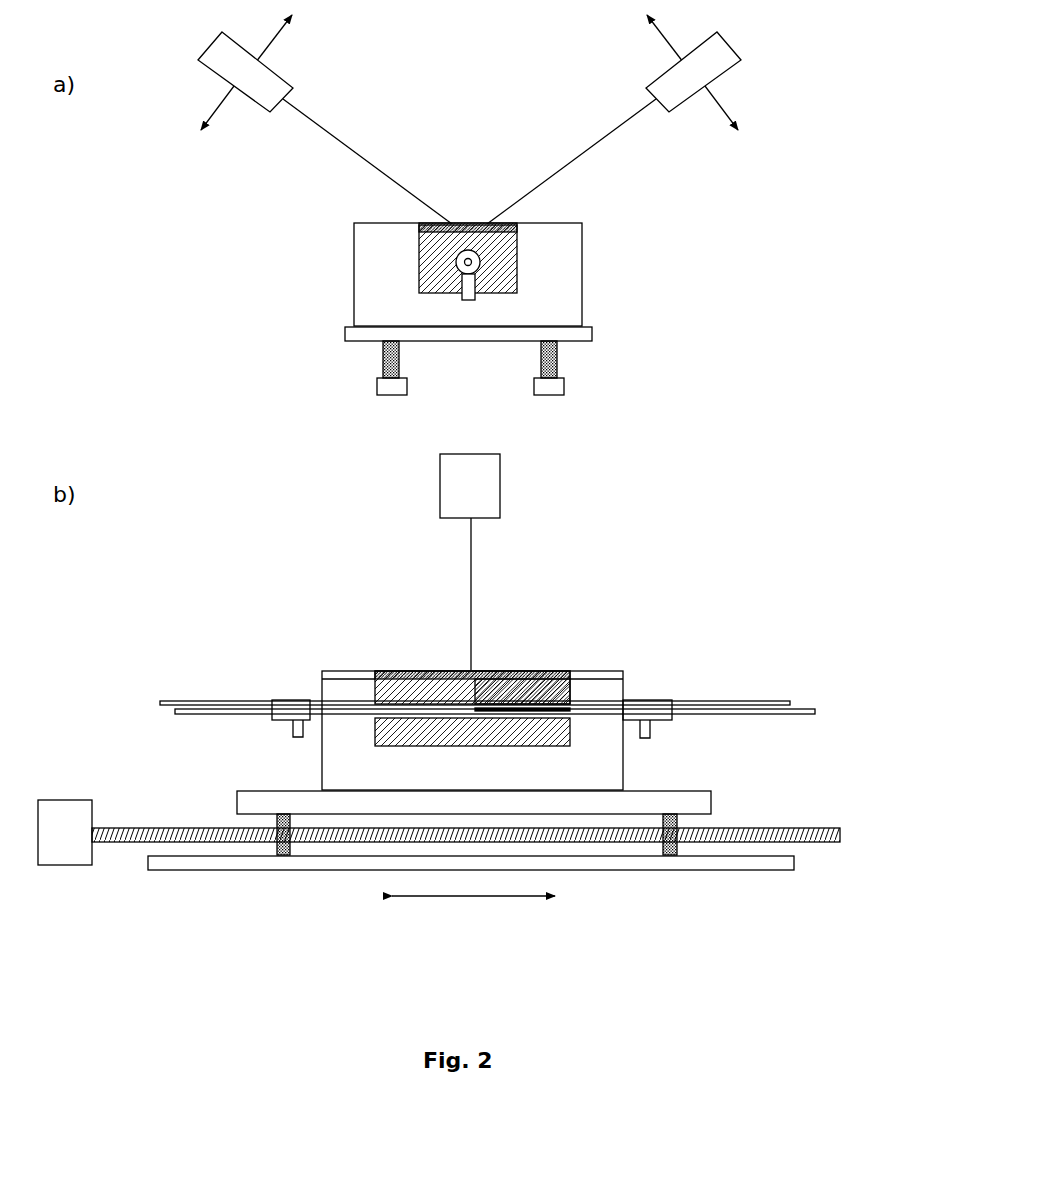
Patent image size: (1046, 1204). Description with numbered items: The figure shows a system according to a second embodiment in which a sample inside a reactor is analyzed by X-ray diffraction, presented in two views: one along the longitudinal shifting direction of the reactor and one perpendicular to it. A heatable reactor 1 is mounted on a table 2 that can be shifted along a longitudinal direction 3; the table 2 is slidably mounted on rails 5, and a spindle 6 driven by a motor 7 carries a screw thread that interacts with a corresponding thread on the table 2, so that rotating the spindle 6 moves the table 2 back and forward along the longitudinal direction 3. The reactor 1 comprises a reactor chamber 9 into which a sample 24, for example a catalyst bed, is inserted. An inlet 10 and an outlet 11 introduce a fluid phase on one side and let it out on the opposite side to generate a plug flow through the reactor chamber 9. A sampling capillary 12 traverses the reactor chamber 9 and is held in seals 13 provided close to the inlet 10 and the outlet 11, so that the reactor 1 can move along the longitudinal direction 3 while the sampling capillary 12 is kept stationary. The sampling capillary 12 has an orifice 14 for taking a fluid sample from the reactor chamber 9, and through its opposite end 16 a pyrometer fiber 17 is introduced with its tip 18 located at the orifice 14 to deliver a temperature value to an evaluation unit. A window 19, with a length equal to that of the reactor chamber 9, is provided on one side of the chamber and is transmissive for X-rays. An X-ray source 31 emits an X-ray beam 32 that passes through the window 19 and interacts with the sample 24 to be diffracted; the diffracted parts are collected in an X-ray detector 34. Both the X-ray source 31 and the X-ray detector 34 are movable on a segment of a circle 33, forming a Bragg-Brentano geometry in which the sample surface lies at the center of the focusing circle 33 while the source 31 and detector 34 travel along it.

The heatable reactor 1 is at (583, 263).
The table 2 is at (593, 335).
The longitudinal direction 3 is at (418, 898).
The rails 5 is at (565, 386).
The spindle 6 is at (824, 828).
The motor 7 is at (70, 808).
The reactor chamber 9 is at (497, 224).
The inlet 10 is at (296, 735).
The outlet 11 is at (468, 300).
The sampling capillary 12 is at (471, 247).
The seals 13 is at (283, 701).
The orifice 14 is at (508, 673).
The opposite end 16 is at (793, 703).
The pyrometer fiber 17 is at (818, 712).
The tip 18 is at (532, 673).
The window 19 is at (452, 224).
The sample 24 is at (419, 232).
The X-ray source 31 is at (217, 37).
The X-ray beam 32 is at (322, 124).
The segment of a circle 33 is at (280, 28).
The X-ray detector 34 is at (728, 50).